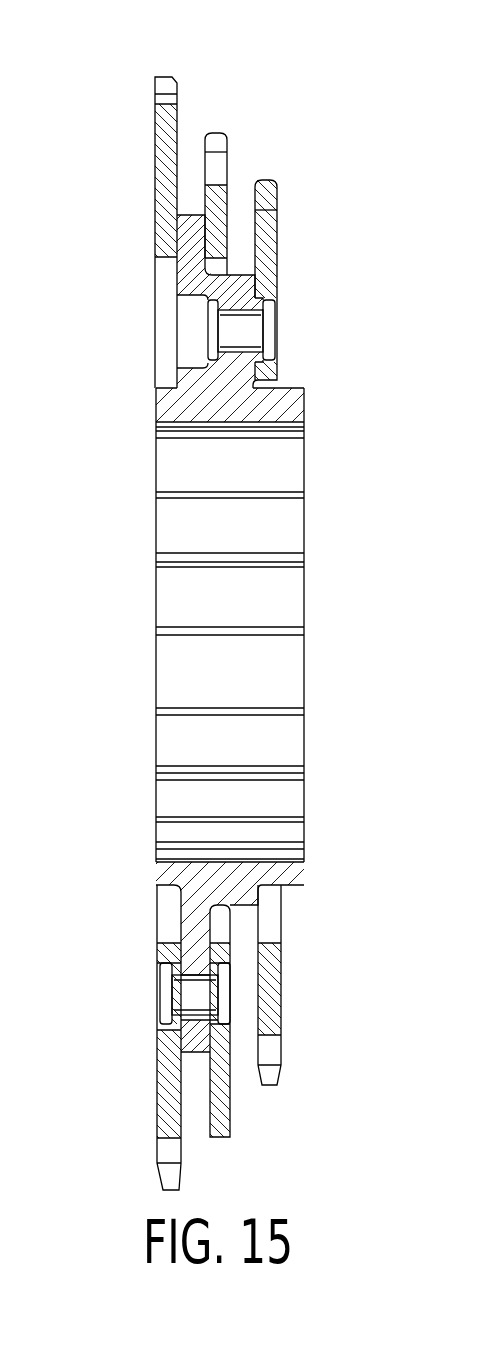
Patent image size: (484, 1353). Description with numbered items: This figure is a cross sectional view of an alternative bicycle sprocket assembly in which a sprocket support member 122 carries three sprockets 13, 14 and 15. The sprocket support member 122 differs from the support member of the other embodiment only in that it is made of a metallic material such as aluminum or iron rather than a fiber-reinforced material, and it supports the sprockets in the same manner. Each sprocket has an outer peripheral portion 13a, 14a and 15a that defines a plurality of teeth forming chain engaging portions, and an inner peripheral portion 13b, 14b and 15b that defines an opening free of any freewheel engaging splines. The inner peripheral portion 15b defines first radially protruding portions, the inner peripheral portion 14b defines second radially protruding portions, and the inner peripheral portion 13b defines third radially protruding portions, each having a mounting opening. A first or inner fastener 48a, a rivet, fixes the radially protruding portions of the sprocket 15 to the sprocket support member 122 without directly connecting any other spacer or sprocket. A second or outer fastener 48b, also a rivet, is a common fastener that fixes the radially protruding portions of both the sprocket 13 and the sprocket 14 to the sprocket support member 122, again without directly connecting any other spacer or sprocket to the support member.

The sprocket 13 is at (154, 70).
The outer peripheral portion 13a is at (177, 100).
The inner peripheral portion 13b is at (157, 957).
The sprocket 14 is at (223, 127).
The outer peripheral portion 14a is at (228, 152).
The inner peripheral portion 14b is at (231, 1042).
The sprocket 15 is at (282, 176).
The outer peripheral portion 15a is at (278, 210).
The inner peripheral portion 15b is at (281, 968).
The inner fastener 48a is at (276, 332).
The outer fastener 48b is at (160, 997).
The sprocket support member 122 is at (148, 401).